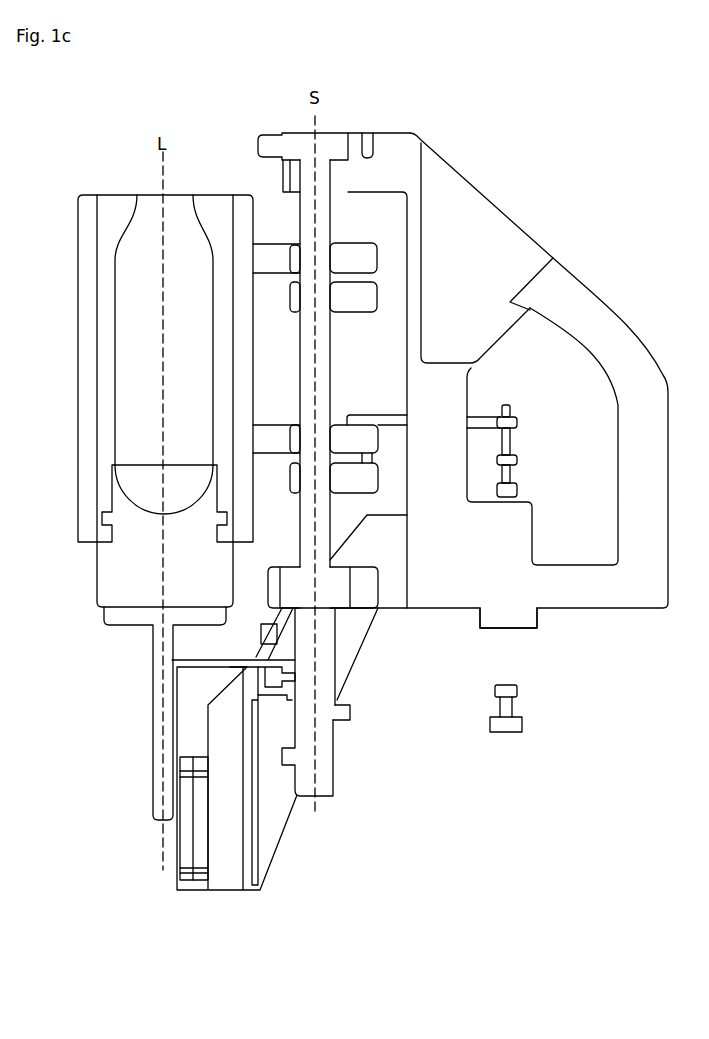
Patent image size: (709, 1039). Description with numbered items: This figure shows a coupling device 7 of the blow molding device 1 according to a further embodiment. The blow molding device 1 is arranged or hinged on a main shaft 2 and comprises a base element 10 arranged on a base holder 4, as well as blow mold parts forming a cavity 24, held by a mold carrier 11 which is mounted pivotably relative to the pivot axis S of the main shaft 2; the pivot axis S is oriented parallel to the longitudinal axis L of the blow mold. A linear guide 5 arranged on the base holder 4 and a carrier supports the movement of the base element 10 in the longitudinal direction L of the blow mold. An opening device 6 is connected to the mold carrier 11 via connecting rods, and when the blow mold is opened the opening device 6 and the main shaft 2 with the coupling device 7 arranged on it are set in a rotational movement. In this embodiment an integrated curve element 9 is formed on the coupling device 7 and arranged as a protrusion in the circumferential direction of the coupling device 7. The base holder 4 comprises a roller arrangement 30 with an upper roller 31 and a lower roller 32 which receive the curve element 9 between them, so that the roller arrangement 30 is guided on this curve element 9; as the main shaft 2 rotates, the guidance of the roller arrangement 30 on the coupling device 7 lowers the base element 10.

The blow molding device 1 is at (493, 158).
The main shaft 2 is at (331, 147).
The base holder 4 is at (122, 613).
The linear guide 5 is at (197, 853).
The opening device 6 is at (515, 602).
The coupling device 7 is at (327, 768).
The curve element 9 is at (297, 688).
The base element 10 is at (130, 572).
The mold carrier 11 is at (87, 212).
The cavity 24 is at (155, 208).
The roller arrangement 30 is at (185, 660).
The upper roller 31 is at (297, 662).
The lower roller 32 is at (350, 722).